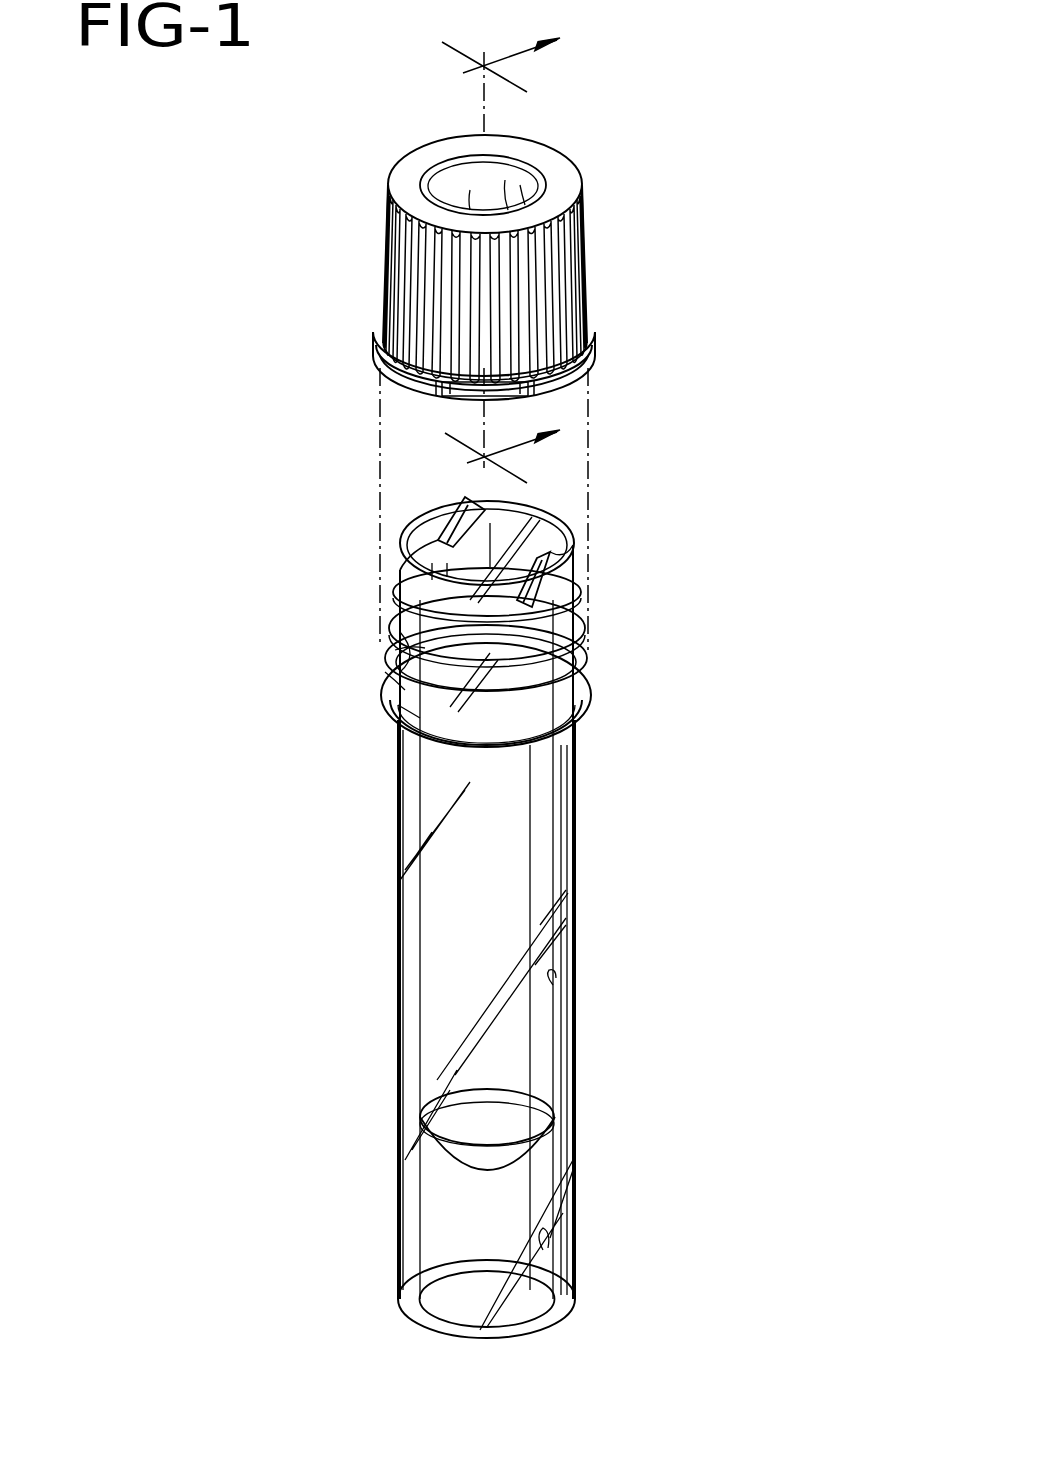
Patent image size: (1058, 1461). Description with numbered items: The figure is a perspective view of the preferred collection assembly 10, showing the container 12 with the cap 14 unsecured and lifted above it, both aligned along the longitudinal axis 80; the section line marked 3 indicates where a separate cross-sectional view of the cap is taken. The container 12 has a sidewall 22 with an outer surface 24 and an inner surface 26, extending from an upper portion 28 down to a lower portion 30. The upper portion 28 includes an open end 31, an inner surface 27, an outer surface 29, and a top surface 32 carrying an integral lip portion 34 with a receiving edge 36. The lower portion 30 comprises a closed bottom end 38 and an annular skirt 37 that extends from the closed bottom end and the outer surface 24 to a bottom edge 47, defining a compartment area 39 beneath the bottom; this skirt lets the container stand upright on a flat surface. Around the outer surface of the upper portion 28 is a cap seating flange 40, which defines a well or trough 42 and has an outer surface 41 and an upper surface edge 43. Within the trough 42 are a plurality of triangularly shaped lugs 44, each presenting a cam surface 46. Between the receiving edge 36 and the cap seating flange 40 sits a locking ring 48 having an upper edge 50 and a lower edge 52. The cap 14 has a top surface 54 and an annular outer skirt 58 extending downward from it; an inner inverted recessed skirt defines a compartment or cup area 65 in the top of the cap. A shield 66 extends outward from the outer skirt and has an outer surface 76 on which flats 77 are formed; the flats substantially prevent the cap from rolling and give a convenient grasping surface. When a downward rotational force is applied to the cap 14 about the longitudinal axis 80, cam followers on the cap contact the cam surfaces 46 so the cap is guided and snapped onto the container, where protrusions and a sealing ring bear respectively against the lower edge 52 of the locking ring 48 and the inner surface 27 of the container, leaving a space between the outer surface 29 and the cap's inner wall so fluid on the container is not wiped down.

The section line 3- 3 is at (501, 260).
The collection assembly 10 is at (752, 238).
The container 12 is at (598, 868).
The cap 14 is at (592, 203).
The sidewall 22 is at (567, 1017).
The outer surface 24 is at (575, 932).
The inner surface 26 is at (553, 985).
The inner surface 27 is at (580, 565).
The upper portion 28 is at (560, 555).
The outer surface 29 is at (590, 645).
The lower portion 30 is at (577, 1080).
The open end 31 is at (470, 520).
The top surface 32 is at (430, 555).
The integral lip portion 34 is at (572, 533).
The receiving edge 36 is at (536, 500).
The annular skirt 37 is at (578, 1215).
The closed bottom end 38 is at (477, 1168).
The compartment area 39 is at (543, 1250).
The cap seating flange 40 is at (590, 690).
The outer surface 41 is at (590, 708).
The trough 42 is at (395, 650).
The upper surface edge 43 is at (385, 672).
The lugs 44 is at (545, 740).
The cam surface 46 is at (575, 730).
The bottom edge 47 is at (495, 1338).
The locking ring 48 is at (400, 632).
The upper edge 50 is at (585, 605).
The lower edge 52 is at (398, 705).
The top surface 54 is at (565, 185).
The annular outer skirt 58 is at (584, 230).
The cup area 65 is at (510, 176).
The shield 66 is at (590, 335).
The outer surface 76 is at (590, 358).
The flats 77 is at (470, 388).
The longitudinal axis 80 is at (478, 97).